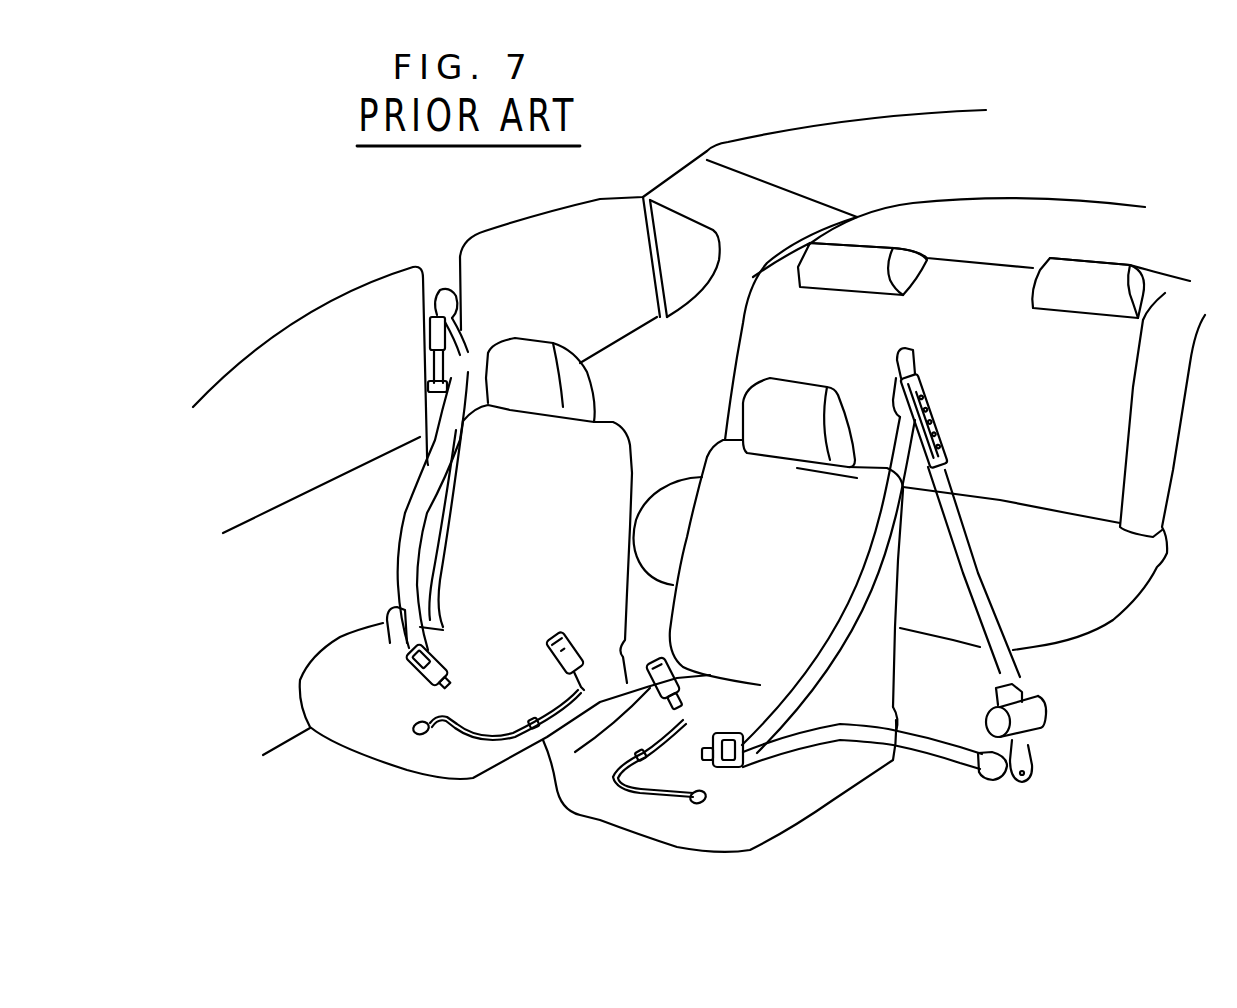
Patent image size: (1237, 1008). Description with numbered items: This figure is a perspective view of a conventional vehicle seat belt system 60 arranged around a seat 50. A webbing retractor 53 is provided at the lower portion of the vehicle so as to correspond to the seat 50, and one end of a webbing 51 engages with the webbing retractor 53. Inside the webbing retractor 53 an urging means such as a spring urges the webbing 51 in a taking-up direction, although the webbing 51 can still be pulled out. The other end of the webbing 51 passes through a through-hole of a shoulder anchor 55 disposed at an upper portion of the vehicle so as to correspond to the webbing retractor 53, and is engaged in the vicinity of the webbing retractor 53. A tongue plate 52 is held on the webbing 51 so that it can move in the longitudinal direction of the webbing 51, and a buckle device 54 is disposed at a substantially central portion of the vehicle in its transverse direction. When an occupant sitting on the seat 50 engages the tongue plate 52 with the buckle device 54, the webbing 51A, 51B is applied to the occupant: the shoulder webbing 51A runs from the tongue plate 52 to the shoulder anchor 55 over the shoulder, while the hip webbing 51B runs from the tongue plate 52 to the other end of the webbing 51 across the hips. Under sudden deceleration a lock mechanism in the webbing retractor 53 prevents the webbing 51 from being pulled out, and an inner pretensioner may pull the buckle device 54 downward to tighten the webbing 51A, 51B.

The seat 50 is at (693, 853).
The webbing 51 is at (881, 647).
The shoulder webbing 51A is at (819, 677).
The hip webbing 51B is at (943, 750).
The tongue plate 52 is at (724, 767).
The webbing retractor 53 is at (1038, 736).
The buckle device 54 is at (553, 778).
The shoulder anchor 55 is at (913, 373).
The seat belt system 60 is at (1083, 678).